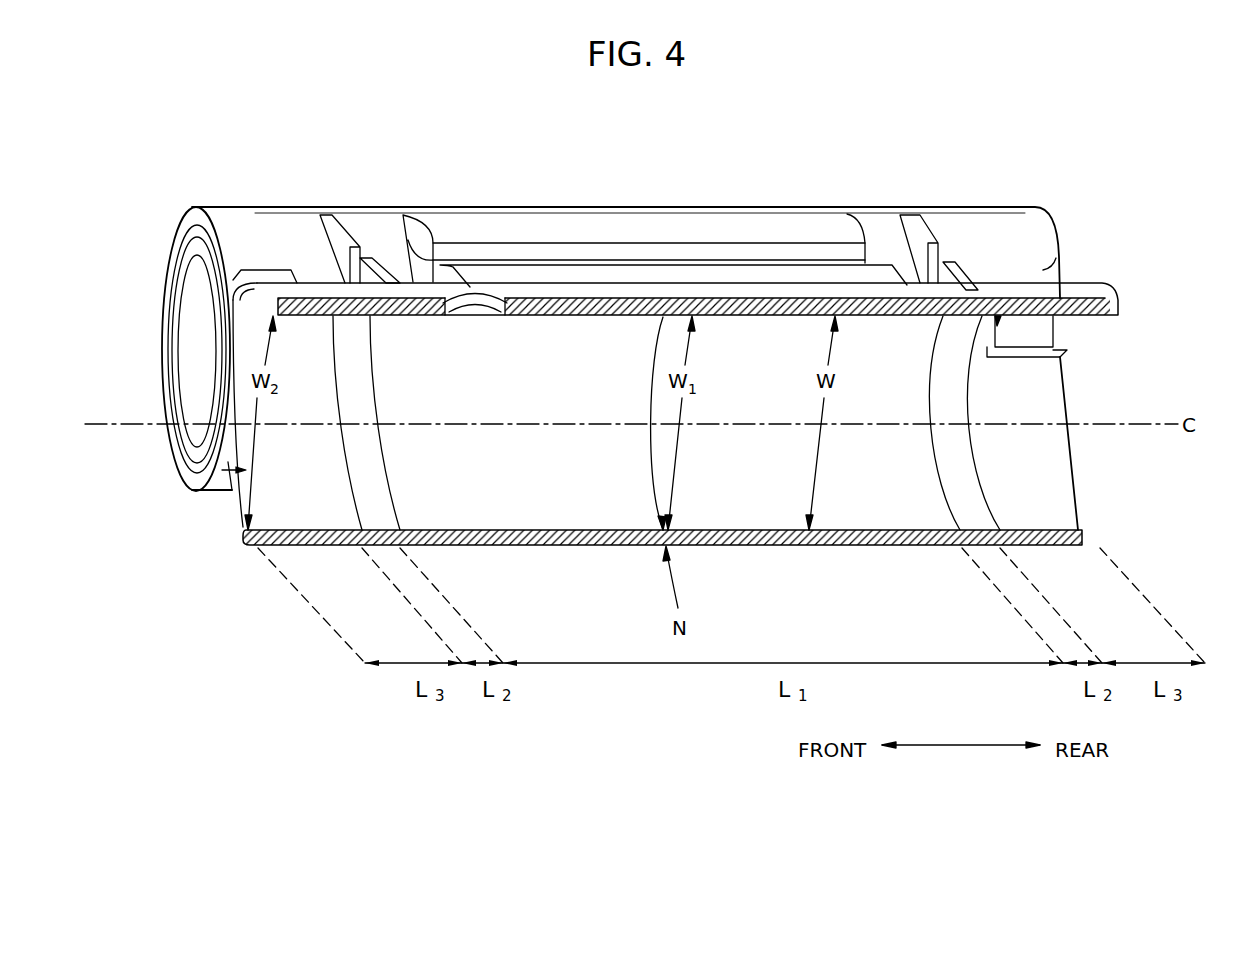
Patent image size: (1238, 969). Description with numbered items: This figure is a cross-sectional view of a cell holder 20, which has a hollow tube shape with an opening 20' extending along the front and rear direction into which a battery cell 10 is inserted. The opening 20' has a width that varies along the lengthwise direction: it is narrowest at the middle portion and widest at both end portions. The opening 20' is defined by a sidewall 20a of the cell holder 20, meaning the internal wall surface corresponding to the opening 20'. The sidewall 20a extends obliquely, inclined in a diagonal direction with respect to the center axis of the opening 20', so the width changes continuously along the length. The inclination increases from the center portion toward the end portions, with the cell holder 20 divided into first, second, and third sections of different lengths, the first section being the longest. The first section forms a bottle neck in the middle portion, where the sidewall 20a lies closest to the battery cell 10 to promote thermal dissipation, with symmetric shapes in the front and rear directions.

The battery cell 10 is at (186, 361).
The cell holder 20 is at (196, 322).
The opening 20' is at (175, 503).
The sidewall 20a is at (240, 472).